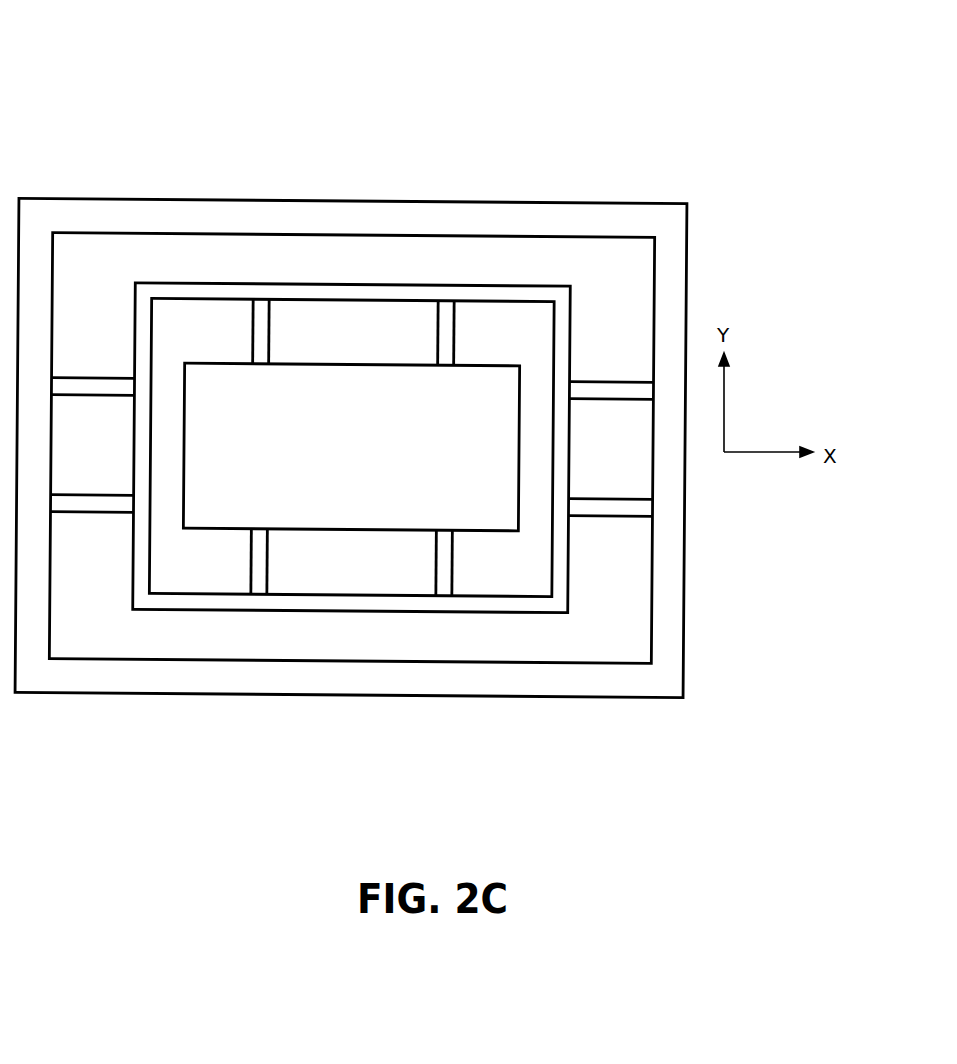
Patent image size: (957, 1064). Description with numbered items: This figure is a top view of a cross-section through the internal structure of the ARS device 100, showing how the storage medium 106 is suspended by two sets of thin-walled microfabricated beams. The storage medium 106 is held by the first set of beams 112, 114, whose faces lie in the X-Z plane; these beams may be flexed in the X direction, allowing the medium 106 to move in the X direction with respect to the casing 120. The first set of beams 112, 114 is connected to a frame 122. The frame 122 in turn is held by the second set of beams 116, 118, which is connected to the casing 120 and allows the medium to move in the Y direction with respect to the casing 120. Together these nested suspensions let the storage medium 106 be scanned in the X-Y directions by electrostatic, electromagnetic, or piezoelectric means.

The ARS device 100 is at (114, 130).
The storage medium 106 is at (369, 459).
The thin-walled beam 112 is at (269, 342).
The thin-walled beam 114 is at (453, 342).
The thin-walled beam 116 is at (610, 519).
The thin-walled beam 118 is at (610, 380).
The casing 120 is at (668, 598).
The frame 122 is at (570, 320).